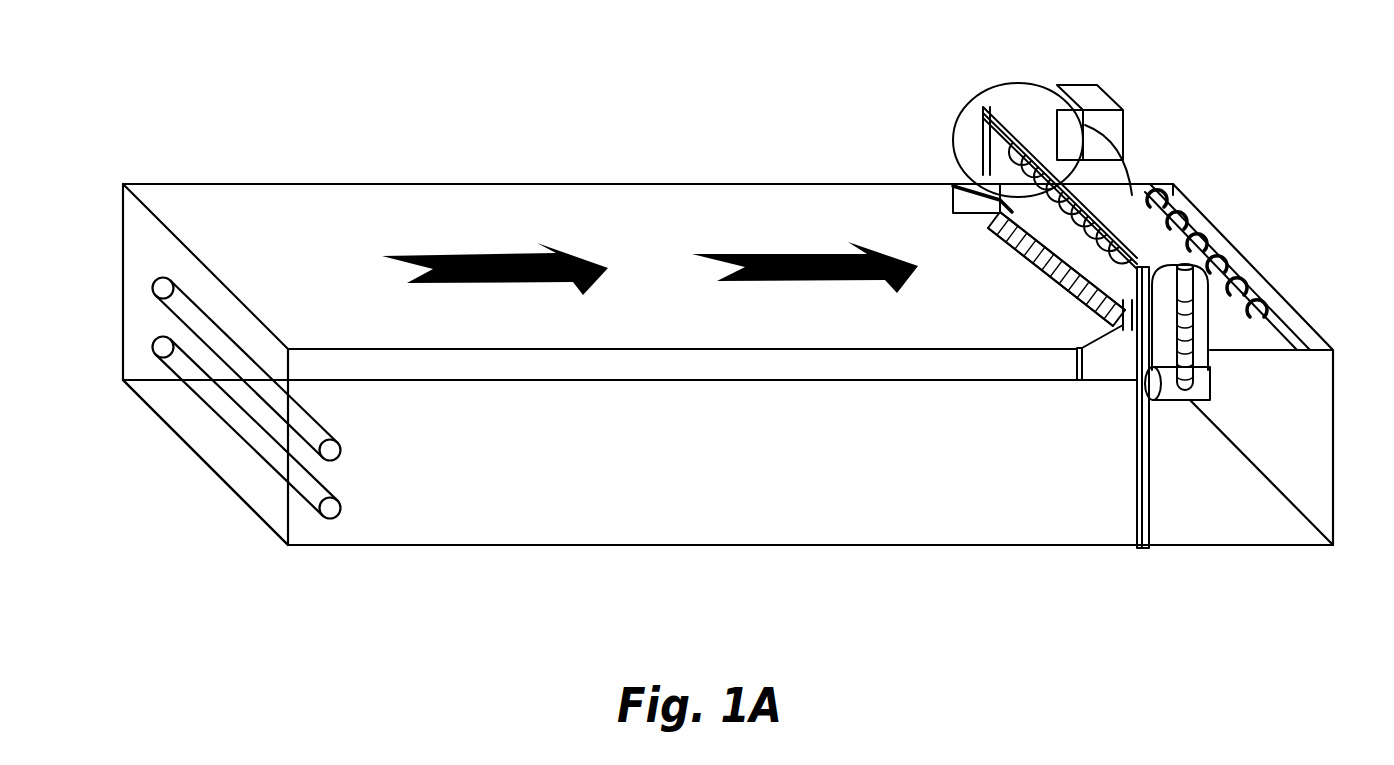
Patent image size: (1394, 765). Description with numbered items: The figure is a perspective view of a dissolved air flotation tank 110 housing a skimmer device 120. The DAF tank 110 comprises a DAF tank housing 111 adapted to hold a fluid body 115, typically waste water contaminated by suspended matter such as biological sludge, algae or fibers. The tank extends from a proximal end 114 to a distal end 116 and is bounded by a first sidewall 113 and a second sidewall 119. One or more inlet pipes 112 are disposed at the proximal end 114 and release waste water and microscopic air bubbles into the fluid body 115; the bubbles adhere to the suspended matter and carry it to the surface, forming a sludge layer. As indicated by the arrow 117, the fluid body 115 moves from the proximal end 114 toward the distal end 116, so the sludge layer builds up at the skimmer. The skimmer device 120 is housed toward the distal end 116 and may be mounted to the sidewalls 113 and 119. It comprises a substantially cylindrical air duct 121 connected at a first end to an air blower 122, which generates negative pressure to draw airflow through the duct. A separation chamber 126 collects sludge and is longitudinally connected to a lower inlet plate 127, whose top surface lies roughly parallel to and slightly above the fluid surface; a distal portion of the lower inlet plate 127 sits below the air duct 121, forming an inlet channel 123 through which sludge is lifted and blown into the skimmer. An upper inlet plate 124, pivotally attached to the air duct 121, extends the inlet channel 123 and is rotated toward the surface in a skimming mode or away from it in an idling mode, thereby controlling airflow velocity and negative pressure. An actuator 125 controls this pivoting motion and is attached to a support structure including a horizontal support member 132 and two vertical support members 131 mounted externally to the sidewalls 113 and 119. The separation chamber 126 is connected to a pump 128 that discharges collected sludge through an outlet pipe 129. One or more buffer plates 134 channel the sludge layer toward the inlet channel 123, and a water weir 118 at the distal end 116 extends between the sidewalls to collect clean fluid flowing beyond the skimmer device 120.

The dissolved air flotation (DAF) tank 110 is at (493, 157).
The DAF tank housing 111 is at (206, 183).
The inlet pipes 112 is at (177, 365).
The sidewall 113 is at (760, 530).
The proximal end 114 is at (230, 460).
The fluid body 115 is at (343, 210).
The distal end 116 is at (1243, 256).
The arrow 117 is at (575, 250).
The water weir 118 is at (1272, 318).
The sidewall 119 is at (690, 183).
The skimmer device 120 is at (1158, 116).
The air duct 121 is at (1095, 185).
The air blower 122 is at (1103, 122).
The inlet channel 123 is at (1042, 268).
The upper inlet plate 124 is at (1003, 208).
The actuator 125 is at (1010, 228).
The separation chamber 126 is at (1073, 320).
The lower inlet plate 127 is at (1080, 312).
The pump 128 is at (1208, 383).
The outlet pipe 129 is at (1187, 341).
The vertical support members 131 is at (990, 107).
The horizontal support member 132 is at (1028, 110).
The buffer plates 134 is at (960, 207).